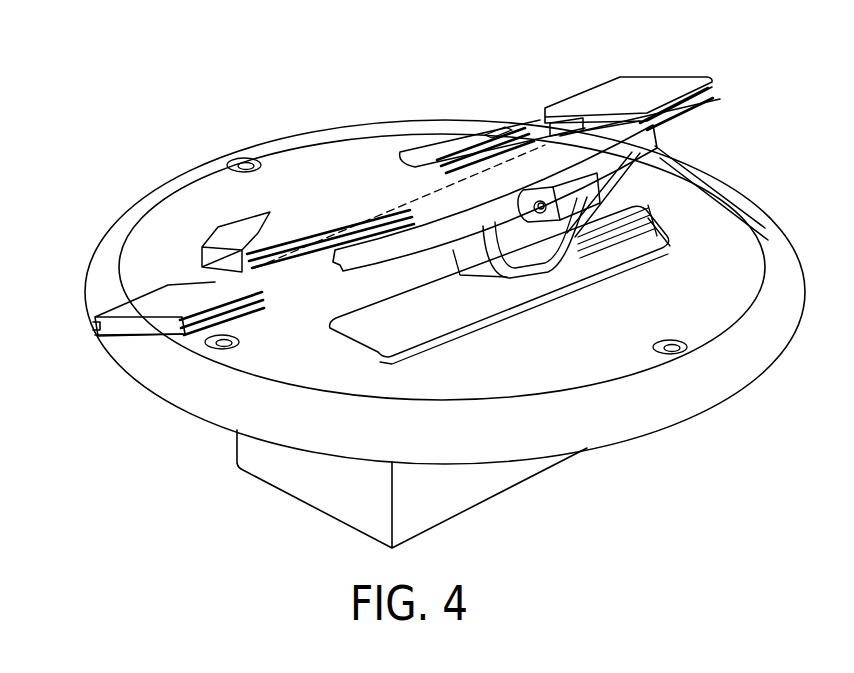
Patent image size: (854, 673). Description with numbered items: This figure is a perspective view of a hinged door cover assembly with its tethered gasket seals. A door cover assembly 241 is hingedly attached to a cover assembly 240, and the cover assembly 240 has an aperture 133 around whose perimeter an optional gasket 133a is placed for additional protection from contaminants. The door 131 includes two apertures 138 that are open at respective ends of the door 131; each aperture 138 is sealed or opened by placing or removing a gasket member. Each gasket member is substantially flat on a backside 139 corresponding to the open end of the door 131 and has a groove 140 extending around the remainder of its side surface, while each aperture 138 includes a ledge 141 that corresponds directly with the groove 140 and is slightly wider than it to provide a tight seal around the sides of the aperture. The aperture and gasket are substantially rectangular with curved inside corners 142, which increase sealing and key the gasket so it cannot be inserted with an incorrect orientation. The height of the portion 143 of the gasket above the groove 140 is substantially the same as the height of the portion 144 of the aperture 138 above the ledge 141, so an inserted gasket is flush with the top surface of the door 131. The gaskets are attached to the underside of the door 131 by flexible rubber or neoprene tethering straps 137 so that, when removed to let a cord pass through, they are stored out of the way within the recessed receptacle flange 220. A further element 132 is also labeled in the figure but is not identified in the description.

The door 131 is at (423, 145).
The contact plate 132 is at (657, 87).
The aperture 133 is at (440, 317).
The optional gasket 133a is at (650, 247).
The tethering straps 137 is at (554, 240).
The apertures 138 is at (540, 143).
The backside 139 is at (667, 73).
The groove 140 is at (717, 95).
The ledge 141 is at (508, 140).
The curved inside corners 142 is at (624, 110).
The portion of the gasket above the groove 143 is at (707, 80).
The portion of aperture above ledge 144 is at (470, 135).
The recessed receptacle flange 220 is at (447, 510).
The cover assembly 240 is at (754, 257).
The door cover assembly 241 is at (654, 143).